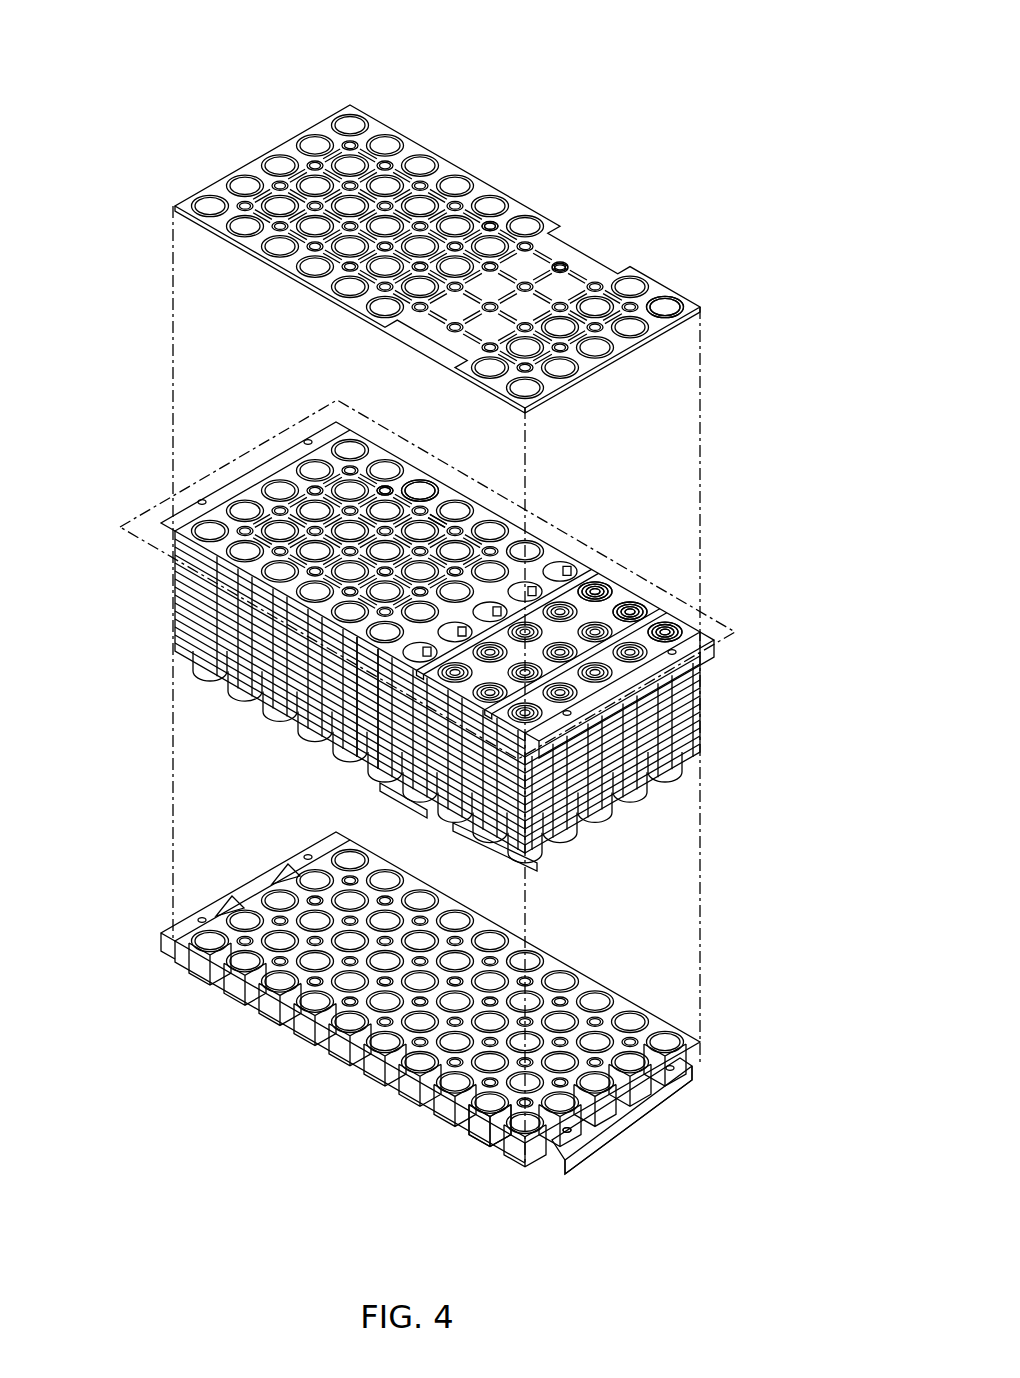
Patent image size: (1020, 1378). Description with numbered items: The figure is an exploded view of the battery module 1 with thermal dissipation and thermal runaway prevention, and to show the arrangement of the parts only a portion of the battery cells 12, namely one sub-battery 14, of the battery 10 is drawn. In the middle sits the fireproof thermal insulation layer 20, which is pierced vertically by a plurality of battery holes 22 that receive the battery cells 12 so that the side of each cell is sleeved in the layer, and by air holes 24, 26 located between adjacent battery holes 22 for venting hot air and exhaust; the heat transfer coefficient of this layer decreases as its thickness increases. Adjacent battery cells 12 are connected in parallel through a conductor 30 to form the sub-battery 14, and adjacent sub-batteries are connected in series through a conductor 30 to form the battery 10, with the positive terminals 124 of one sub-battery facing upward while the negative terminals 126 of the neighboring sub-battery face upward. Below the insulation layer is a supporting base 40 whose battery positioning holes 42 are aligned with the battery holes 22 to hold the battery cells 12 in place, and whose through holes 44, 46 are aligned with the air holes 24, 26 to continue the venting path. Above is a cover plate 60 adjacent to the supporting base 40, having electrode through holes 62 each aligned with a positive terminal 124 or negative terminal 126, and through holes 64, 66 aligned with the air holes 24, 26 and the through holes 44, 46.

The battery module 1 is at (651, 44).
The battery 10 is at (330, 404).
The battery cell 12 is at (360, 735).
The sub-battery 14 is at (705, 645).
The fireproof thermal insulation layer 20 is at (178, 607).
The battery hole 22 is at (421, 492).
The air hole 24 is at (385, 492).
The air hole 26 is at (440, 520).
The conductor 30 is at (358, 750).
The supporting base 40 is at (675, 1092).
The battery positioning hole 42 is at (462, 1117).
The through hole 44 is at (568, 1133).
The through hole 46 is at (608, 1103).
The cover plate 60 is at (602, 266).
The electrode through hole 62 is at (672, 300).
The through hole 64 is at (490, 226).
The through hole 66 is at (548, 250).
The positive terminal 124 is at (636, 592).
The negative terminal 126 is at (600, 577).